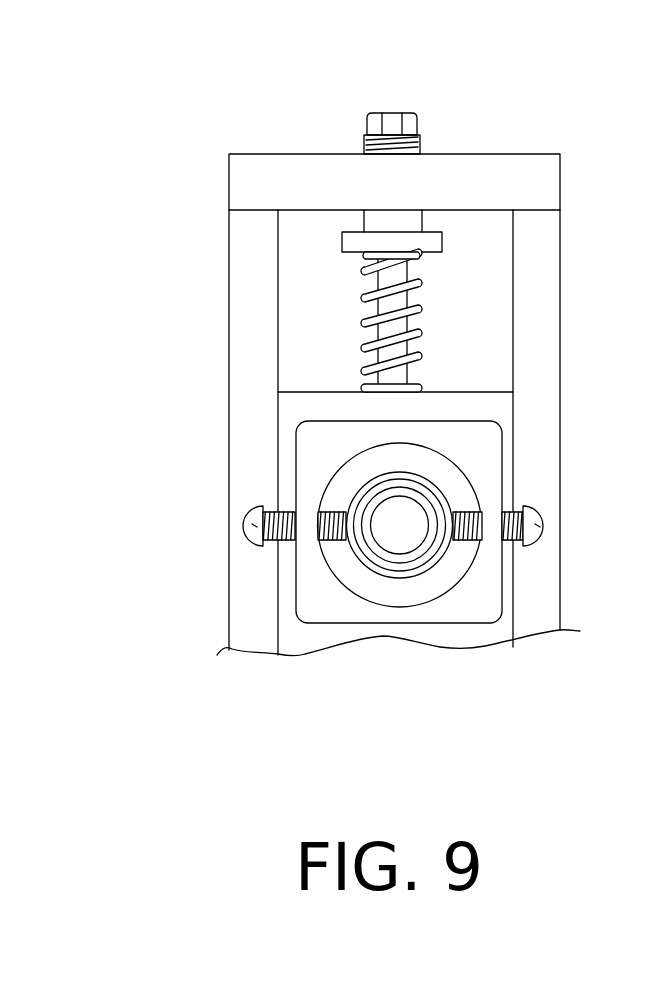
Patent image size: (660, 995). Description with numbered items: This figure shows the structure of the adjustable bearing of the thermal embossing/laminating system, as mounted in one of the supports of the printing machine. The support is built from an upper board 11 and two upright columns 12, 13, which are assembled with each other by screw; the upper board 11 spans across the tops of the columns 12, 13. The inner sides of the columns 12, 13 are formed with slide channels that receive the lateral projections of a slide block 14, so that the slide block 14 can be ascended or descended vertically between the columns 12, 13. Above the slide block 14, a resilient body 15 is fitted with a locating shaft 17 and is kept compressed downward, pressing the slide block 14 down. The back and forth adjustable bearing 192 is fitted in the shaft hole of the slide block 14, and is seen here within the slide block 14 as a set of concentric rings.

The upper board 11 is at (498, 168).
The upright column 12 is at (535, 270).
The upright column 13 is at (250, 256).
The slide block 14 is at (295, 410).
The resilient body 15 is at (420, 319).
The locating shaft 17 is at (368, 118).
The adjustable bearing 192 is at (404, 567).